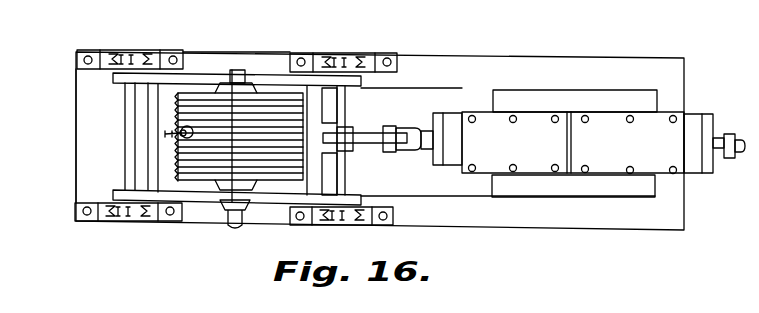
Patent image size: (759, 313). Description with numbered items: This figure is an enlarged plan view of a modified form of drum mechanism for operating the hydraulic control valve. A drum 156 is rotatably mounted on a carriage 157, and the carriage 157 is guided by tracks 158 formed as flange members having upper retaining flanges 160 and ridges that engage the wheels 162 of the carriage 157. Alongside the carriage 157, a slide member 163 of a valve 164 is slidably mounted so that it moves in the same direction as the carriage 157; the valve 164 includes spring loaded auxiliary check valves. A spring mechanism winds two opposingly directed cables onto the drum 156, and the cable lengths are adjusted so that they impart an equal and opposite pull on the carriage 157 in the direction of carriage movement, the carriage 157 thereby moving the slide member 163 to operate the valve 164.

The drum 156 is at (197, 99).
The carriage 157 is at (268, 78).
The tracks 158 is at (137, 47).
The upper retaining flanges 160 is at (97, 70).
The wheels 162 is at (146, 57).
The slide member 163 is at (433, 114).
The valve 164 is at (537, 125).